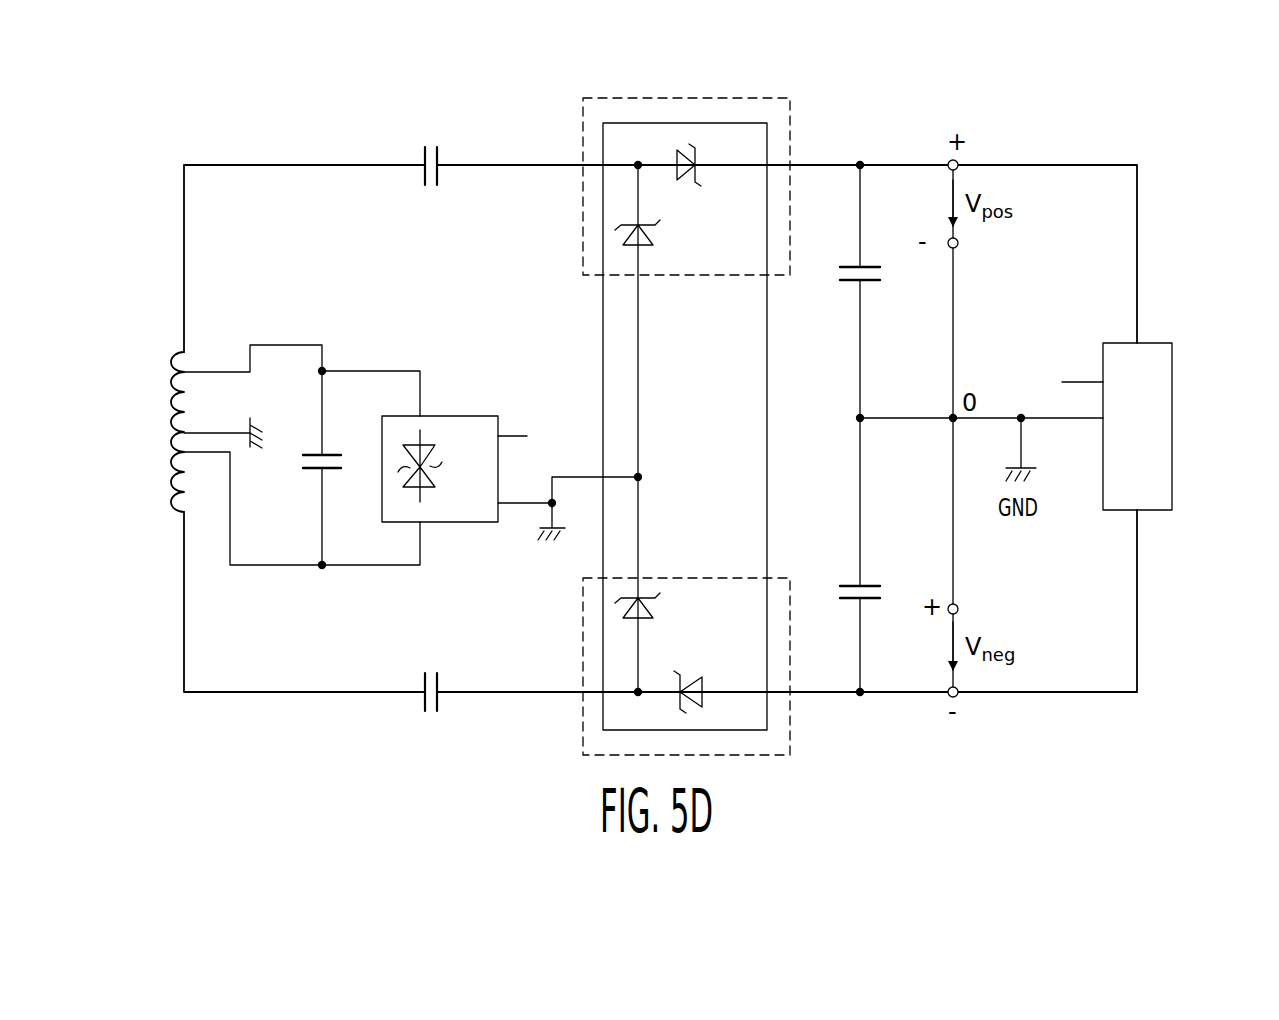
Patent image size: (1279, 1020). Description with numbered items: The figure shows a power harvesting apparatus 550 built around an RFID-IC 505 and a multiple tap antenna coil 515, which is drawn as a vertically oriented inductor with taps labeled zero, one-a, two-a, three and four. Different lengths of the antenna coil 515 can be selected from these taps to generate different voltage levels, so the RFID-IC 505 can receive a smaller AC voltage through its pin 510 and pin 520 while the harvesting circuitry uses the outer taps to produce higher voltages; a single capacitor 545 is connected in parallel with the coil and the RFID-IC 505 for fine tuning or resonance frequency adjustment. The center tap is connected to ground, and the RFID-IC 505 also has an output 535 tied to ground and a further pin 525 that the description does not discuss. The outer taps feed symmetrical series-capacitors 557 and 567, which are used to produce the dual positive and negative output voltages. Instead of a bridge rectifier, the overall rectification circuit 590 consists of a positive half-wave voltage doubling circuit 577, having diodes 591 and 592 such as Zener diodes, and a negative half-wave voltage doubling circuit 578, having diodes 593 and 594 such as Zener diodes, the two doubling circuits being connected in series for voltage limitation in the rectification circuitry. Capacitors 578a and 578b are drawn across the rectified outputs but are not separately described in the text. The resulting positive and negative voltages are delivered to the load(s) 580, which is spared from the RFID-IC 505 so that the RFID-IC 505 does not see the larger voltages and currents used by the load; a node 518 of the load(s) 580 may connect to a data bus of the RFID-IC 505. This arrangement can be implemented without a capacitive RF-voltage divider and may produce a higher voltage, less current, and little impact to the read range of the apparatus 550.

The RFID-IC 505 is at (481, 450).
The pin 510 is at (421, 415).
The multiple tap antenna coil 515 is at (155, 438).
The node 518 is at (1072, 380).
The pin 520 is at (422, 523).
The control input 525 is at (499, 432).
The output 535 is at (499, 507).
The capacitor 545 is at (313, 473).
The power supply circuit 550 is at (1234, 155).
The series-capacitor 557 is at (424, 160).
The series-capacitor 567 is at (424, 700).
The positive half-wave voltage doubling circuit 577 is at (583, 122).
The negative half-wave voltage doubling circuit 578 is at (583, 707).
The output capacitor 578a is at (853, 283).
The output capacitor 578b is at (848, 583).
The load(s) 580 is at (1155, 434).
The overall rectification circuit 590 is at (603, 343).
The diode 591 is at (653, 243).
The diode 592 is at (700, 175).
The diode 593 is at (655, 608).
The diode 594 is at (702, 677).